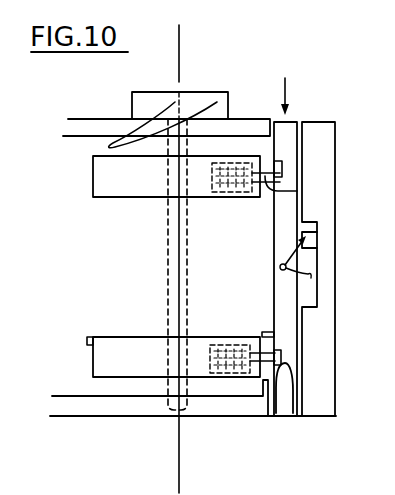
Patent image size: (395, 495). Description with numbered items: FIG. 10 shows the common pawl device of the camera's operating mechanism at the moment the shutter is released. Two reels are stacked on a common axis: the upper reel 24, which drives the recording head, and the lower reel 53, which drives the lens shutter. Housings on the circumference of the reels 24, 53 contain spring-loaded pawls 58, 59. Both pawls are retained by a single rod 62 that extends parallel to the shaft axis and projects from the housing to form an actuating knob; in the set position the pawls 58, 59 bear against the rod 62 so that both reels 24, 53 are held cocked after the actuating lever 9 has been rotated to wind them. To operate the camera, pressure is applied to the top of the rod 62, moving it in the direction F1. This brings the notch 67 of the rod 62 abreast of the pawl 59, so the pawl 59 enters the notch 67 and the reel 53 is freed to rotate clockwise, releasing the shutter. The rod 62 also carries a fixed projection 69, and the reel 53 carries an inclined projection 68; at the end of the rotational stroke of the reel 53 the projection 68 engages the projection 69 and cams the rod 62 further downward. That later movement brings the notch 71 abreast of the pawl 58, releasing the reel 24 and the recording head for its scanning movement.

The lever 9 is at (192, 105).
The reel 24 is at (124, 180).
The reel 53 is at (134, 348).
The pawl 58 is at (297, 191).
The pawl 59 is at (265, 366).
The rod 62 is at (288, 130).
The notch 67 is at (289, 415).
The inclined projection 68 is at (87, 340).
The projection 69 is at (265, 331).
The notch 71 is at (282, 165).
The direction of rod movement F1 is at (297, 91).